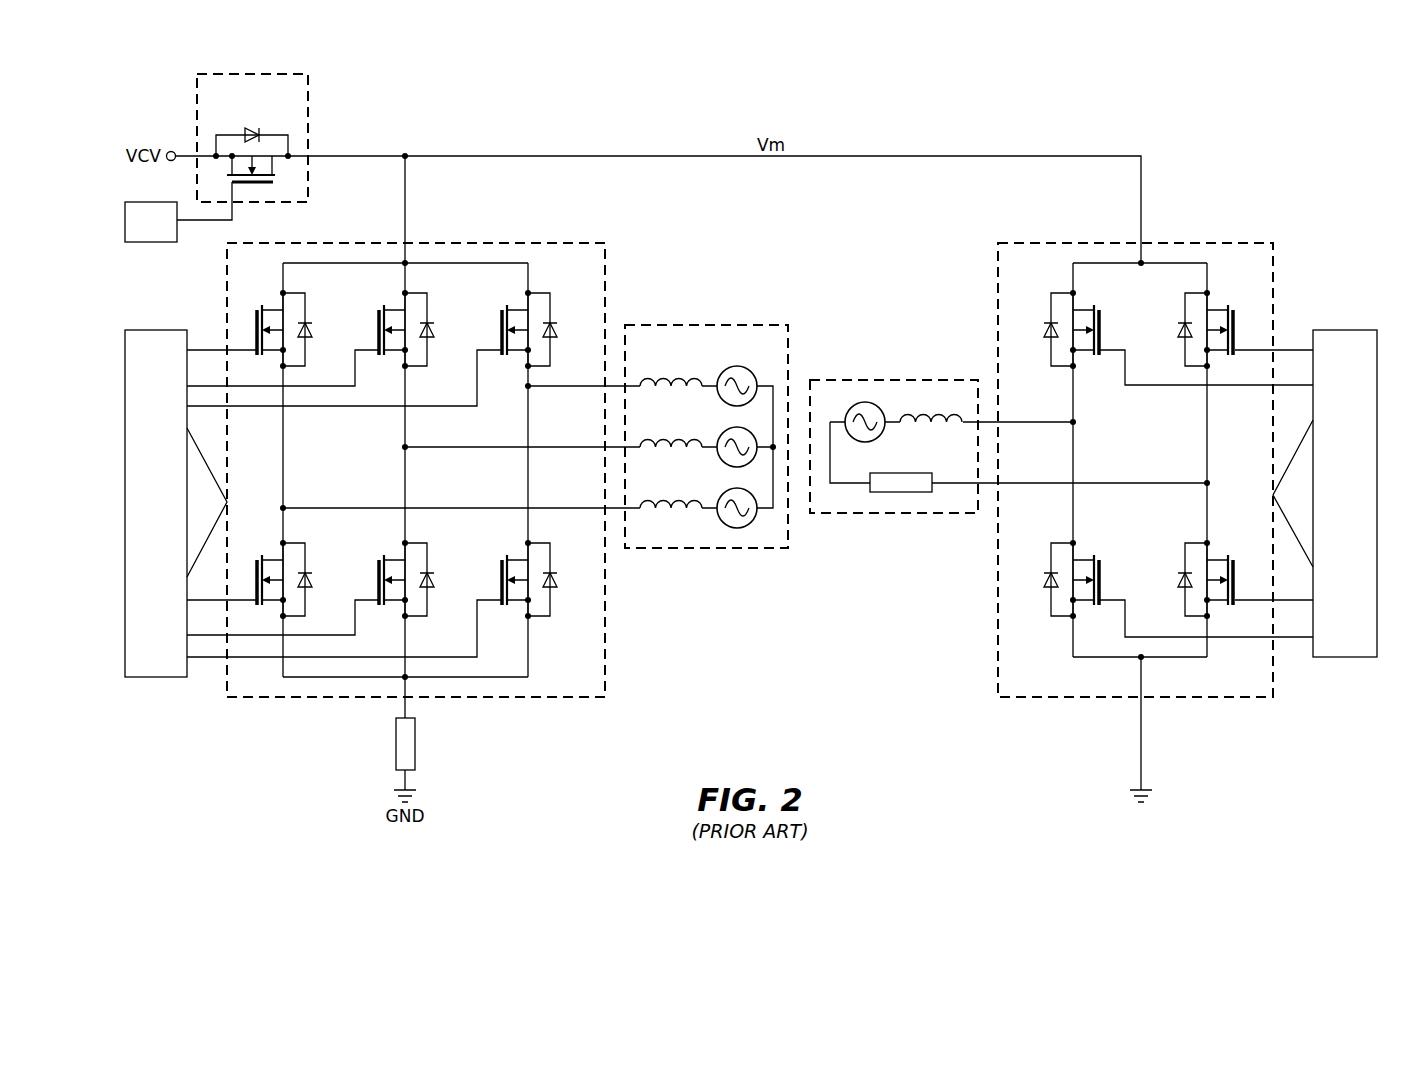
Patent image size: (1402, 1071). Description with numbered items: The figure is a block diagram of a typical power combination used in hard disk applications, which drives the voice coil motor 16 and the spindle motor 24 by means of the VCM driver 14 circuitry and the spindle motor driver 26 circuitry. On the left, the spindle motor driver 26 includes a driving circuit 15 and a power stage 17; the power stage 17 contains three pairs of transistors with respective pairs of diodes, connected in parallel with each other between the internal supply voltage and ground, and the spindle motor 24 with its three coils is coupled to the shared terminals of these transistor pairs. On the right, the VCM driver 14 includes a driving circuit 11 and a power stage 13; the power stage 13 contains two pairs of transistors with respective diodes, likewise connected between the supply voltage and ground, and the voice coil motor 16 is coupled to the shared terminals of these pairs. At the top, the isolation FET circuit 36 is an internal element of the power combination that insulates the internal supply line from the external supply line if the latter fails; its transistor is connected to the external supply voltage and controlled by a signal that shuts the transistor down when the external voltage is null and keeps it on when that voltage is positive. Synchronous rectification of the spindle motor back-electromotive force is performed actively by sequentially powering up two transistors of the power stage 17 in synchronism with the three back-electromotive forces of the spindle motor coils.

The Iso-Fet circuit 36 is at (242, 72).
The spindle motor driver 26 is at (258, 768).
The driving circuit 15 is at (146, 513).
The power stage 17 is at (330, 698).
The spindle motor 24 is at (705, 323).
The voice coil motor 16 is at (893, 378).
The power stage 13 is at (1212, 242).
The VCM driver 14 is at (1296, 717).
The driving circuit 11 is at (1334, 503).